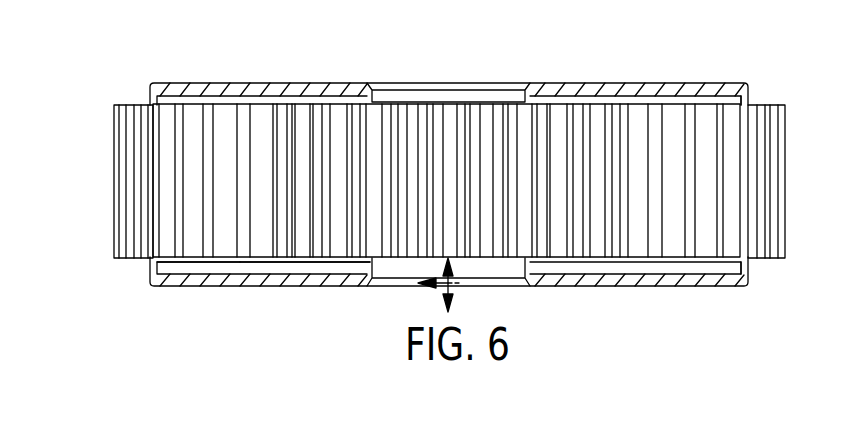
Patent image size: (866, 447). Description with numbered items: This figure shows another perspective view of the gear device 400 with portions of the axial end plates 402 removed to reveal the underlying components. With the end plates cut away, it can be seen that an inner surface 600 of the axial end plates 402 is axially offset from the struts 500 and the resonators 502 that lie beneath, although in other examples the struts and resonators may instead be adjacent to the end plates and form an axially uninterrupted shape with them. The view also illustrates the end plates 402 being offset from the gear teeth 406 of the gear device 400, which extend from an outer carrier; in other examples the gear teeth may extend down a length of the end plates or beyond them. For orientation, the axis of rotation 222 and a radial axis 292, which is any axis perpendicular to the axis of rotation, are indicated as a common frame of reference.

The gear device 400 is at (790, 62).
The axial end plates 402 is at (757, 90).
The gear teeth 406 is at (360, 255).
The struts 500 is at (188, 262).
The resonators 502 is at (270, 262).
The inner surface 600 is at (232, 96).
The radial axis 292 is at (438, 288).
The axis of rotation 222 is at (460, 288).